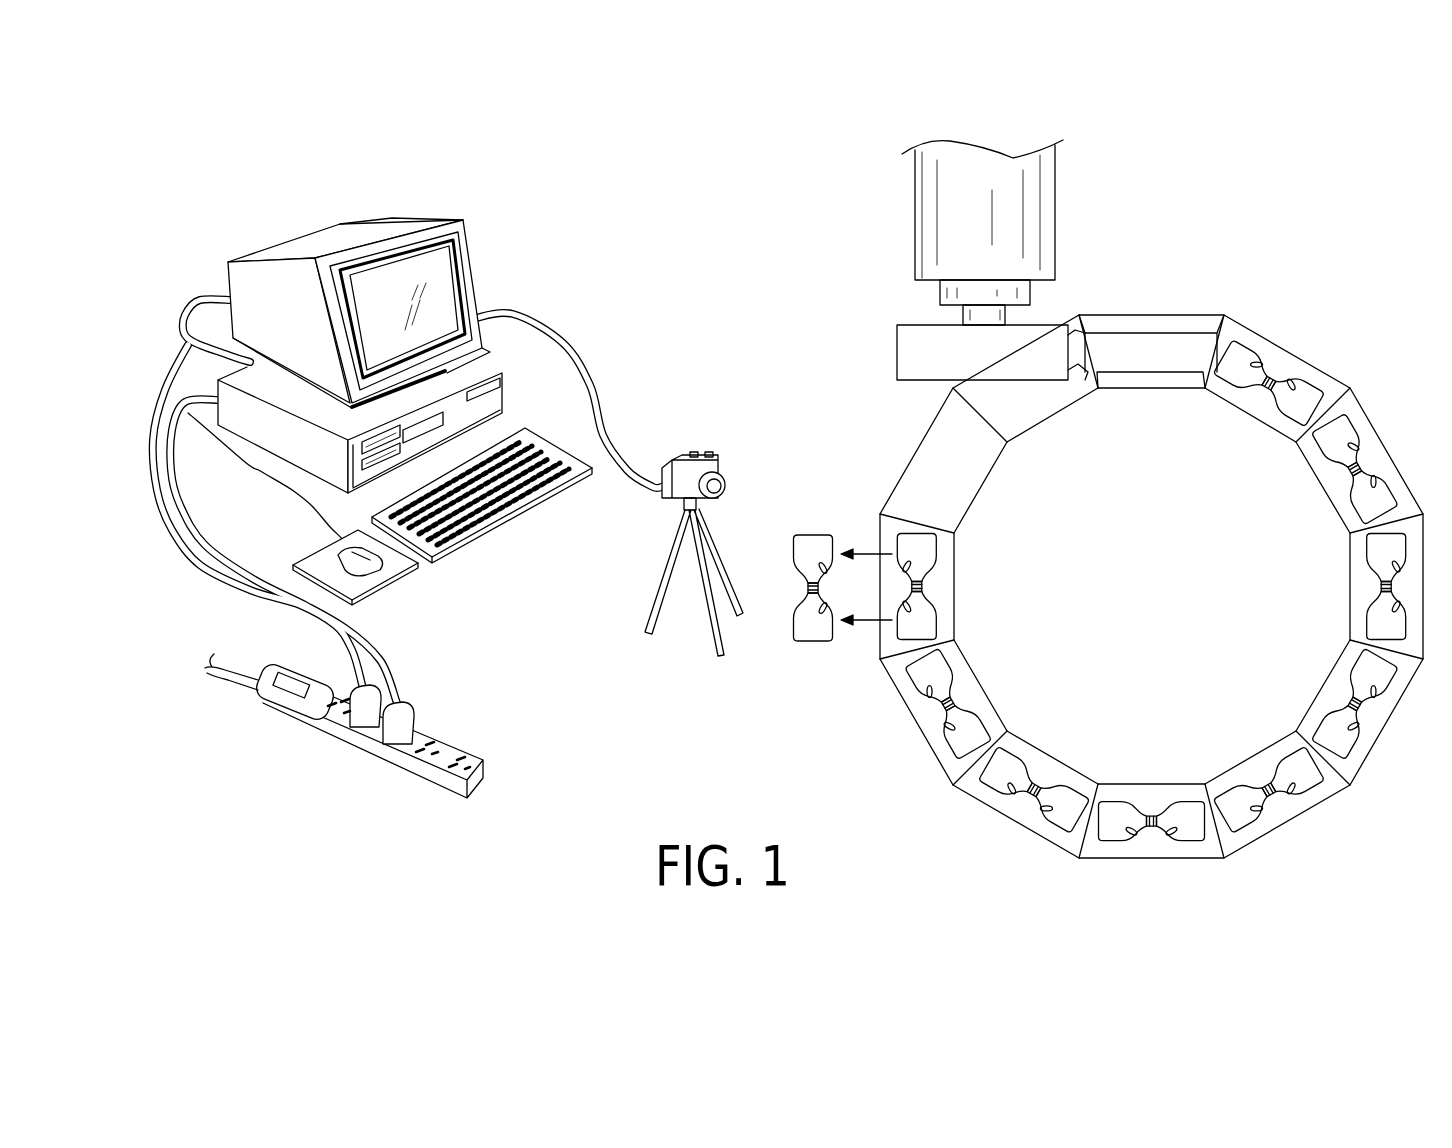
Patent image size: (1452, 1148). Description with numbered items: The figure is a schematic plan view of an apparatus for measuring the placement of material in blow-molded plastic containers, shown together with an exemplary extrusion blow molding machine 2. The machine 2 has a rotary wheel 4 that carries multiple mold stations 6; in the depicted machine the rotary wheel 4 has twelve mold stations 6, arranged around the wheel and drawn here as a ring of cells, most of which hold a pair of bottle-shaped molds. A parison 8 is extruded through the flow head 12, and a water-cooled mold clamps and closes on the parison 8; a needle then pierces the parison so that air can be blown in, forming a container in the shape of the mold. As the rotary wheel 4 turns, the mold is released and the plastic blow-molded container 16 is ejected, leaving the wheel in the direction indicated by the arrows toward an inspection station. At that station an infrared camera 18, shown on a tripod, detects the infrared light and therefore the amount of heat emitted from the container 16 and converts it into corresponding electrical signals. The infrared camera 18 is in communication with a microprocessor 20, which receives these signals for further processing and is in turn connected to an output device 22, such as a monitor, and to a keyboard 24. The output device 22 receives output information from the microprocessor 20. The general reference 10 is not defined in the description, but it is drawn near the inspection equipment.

The extrusion blow molding machine 2 is at (1146, 255).
The rotary wheel 4 is at (1232, 432).
The mold stations 6 is at (997, 812).
The parison 8 is at (1176, 340).
The inspection system 10 is at (660, 270).
The flow head 12 is at (897, 352).
The plastic blow-molded container 16 is at (811, 537).
The infrared camera 18 is at (688, 460).
The microprocessor 20 is at (488, 403).
The output device 22 is at (388, 280).
The keyboard 24 is at (513, 503).